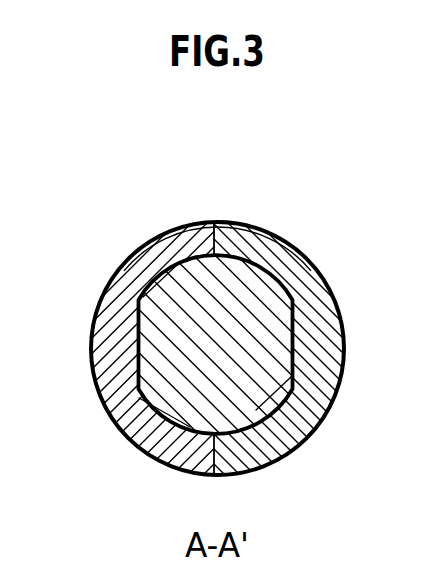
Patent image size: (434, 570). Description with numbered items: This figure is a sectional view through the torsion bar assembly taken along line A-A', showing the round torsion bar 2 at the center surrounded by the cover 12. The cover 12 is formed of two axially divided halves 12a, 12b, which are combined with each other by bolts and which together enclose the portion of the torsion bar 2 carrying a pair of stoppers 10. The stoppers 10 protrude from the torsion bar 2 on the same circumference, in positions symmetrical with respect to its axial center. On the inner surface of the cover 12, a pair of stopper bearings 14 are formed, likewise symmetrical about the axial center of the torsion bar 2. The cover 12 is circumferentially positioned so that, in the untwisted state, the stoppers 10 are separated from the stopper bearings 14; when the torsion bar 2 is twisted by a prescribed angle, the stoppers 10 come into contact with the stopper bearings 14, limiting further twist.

The torsion bar 2 is at (160, 348).
The stoppers 10 is at (229, 250).
The cover 12 is at (213, 223).
The axially divided half of the cover 12a is at (306, 269).
The axially divided half of the cover 12b is at (124, 272).
The stopper bearings 14 is at (126, 271).